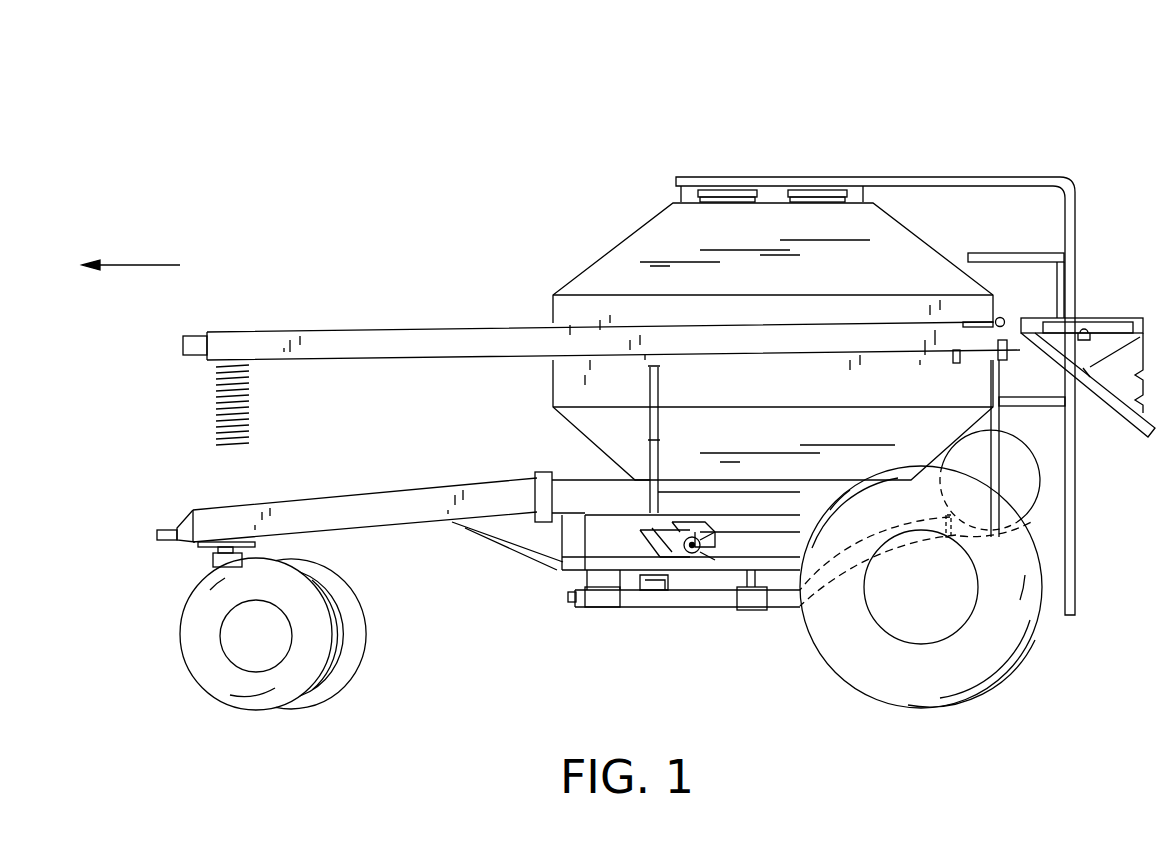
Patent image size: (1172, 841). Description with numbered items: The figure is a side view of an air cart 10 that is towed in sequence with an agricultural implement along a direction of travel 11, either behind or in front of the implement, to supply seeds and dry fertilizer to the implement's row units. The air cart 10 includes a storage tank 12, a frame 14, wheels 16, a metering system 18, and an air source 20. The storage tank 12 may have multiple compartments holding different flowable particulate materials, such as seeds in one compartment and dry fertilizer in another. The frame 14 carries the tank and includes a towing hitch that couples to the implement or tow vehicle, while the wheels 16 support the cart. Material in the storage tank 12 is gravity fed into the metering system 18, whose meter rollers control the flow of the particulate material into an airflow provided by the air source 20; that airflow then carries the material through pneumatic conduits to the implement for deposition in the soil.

The air cart 10 is at (619, 139).
The direction of travel 11 is at (137, 264).
The storage tank 12 is at (654, 236).
The frame 14 is at (361, 497).
The wheels 16 is at (205, 690).
The metering system 18 is at (716, 556).
The air source 20 is at (1020, 467).